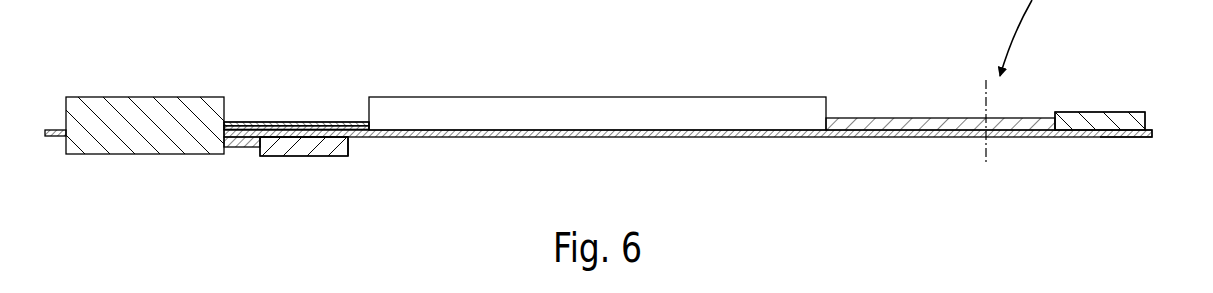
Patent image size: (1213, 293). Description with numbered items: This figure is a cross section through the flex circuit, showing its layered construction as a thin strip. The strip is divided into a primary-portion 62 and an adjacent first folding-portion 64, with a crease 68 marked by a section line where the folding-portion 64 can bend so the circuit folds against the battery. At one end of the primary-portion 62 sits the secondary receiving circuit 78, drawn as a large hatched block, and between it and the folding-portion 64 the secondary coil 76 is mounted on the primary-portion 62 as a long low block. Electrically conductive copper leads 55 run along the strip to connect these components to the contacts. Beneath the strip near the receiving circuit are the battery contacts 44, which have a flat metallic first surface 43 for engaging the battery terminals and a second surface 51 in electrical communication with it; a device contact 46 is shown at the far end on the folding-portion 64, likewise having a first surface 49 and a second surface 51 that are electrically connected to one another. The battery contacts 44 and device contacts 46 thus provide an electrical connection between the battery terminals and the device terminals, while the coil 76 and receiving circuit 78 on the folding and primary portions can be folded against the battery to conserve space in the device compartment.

The secondary receiving circuit 78 is at (133, 97).
The secondary coil 76 is at (522, 97).
The electrically conductive copper leads 55 is at (267, 122).
The primary-portion 62 is at (901, 142).
The first folding-portion 64 is at (1032, 118).
The first surface 43 is at (319, 158).
The second surface 51 is at (335, 158).
The battery contacts 44 is at (350, 148).
The first surface 49 is at (1145, 112).
The device contacts 46 is at (1147, 122).
The crease 68 is at (987, 120).